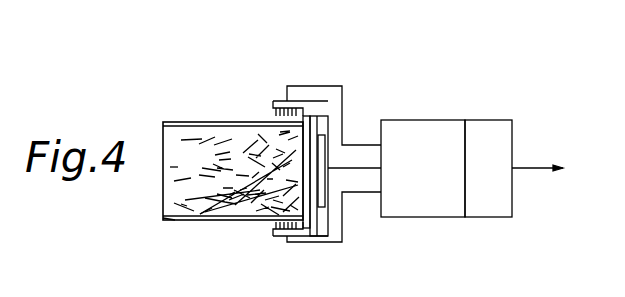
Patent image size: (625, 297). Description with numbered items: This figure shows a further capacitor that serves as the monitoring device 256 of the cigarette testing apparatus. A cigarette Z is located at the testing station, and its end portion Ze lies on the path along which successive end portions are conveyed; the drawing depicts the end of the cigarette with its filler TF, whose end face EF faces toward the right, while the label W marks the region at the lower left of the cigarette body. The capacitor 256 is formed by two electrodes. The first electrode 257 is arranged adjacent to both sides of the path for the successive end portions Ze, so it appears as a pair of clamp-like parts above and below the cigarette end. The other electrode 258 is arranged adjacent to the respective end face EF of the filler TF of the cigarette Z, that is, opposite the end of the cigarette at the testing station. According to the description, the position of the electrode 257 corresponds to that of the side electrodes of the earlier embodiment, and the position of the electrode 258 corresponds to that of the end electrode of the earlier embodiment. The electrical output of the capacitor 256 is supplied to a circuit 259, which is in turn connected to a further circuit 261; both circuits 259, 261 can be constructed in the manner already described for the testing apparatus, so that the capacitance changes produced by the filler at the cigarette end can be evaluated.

The cigarette Z is at (179, 121).
The filler TF is at (177, 167).
The wall W is at (171, 221).
The end face EF is at (200, 213).
The end portion Ze is at (293, 150).
The electrode 257 is at (267, 104).
The electrode 258 is at (318, 190).
The capacitor 256 is at (368, 95).
The circuit 259 is at (432, 184).
The circuit 261 is at (505, 181).